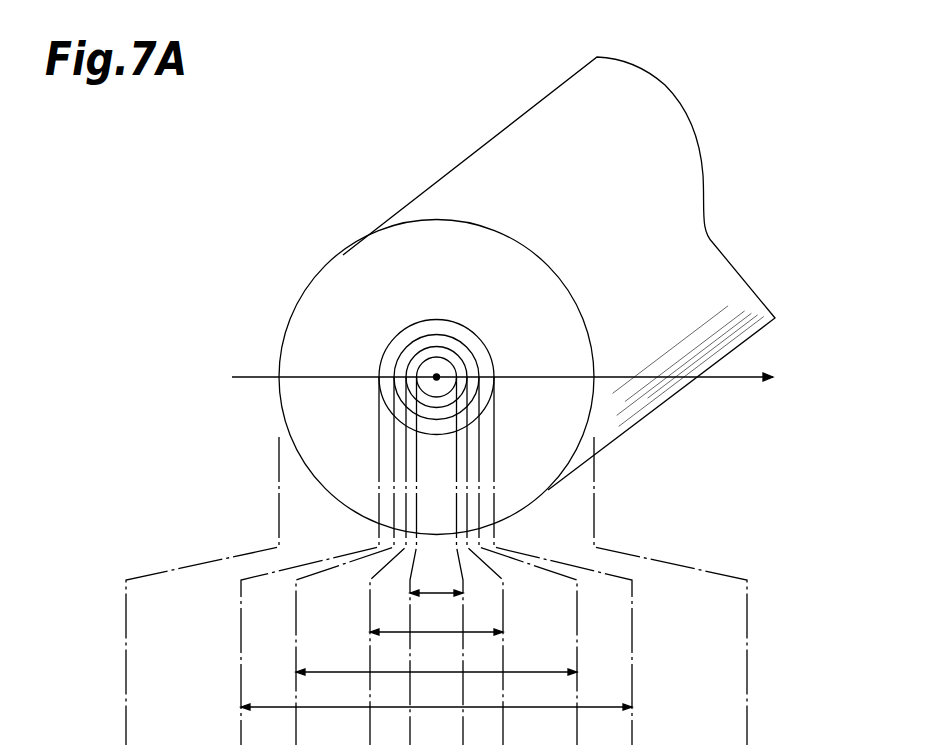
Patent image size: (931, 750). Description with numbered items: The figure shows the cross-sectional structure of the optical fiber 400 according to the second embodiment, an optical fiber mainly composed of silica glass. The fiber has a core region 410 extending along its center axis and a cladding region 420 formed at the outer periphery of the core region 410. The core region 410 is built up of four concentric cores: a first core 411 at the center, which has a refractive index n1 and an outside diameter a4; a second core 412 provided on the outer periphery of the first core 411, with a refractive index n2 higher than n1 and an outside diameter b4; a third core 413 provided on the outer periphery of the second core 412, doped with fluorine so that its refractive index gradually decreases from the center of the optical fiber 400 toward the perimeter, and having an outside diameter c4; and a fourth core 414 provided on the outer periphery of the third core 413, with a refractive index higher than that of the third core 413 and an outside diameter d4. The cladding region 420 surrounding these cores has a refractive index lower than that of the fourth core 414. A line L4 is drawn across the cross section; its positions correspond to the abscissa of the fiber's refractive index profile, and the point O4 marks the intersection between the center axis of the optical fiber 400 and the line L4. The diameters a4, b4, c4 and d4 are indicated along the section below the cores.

The optical fiber 400 is at (640, 105).
The core region 410 is at (324, 303).
The first core 411 is at (420, 370).
The second core 412 is at (420, 355).
The third core 413 is at (420, 340).
The fourth core 414 is at (418, 323).
The cladding region 420 is at (322, 410).
The intersection O4 is at (438, 374).
The line L4 is at (517, 378).
The outside diameter of the first core a4 is at (436, 608).
The outside diameter of the second core b4 is at (436, 646).
The outside diameter of the third core c4 is at (436, 684).
The outside diameter of the fourth core d4 is at (436, 719).